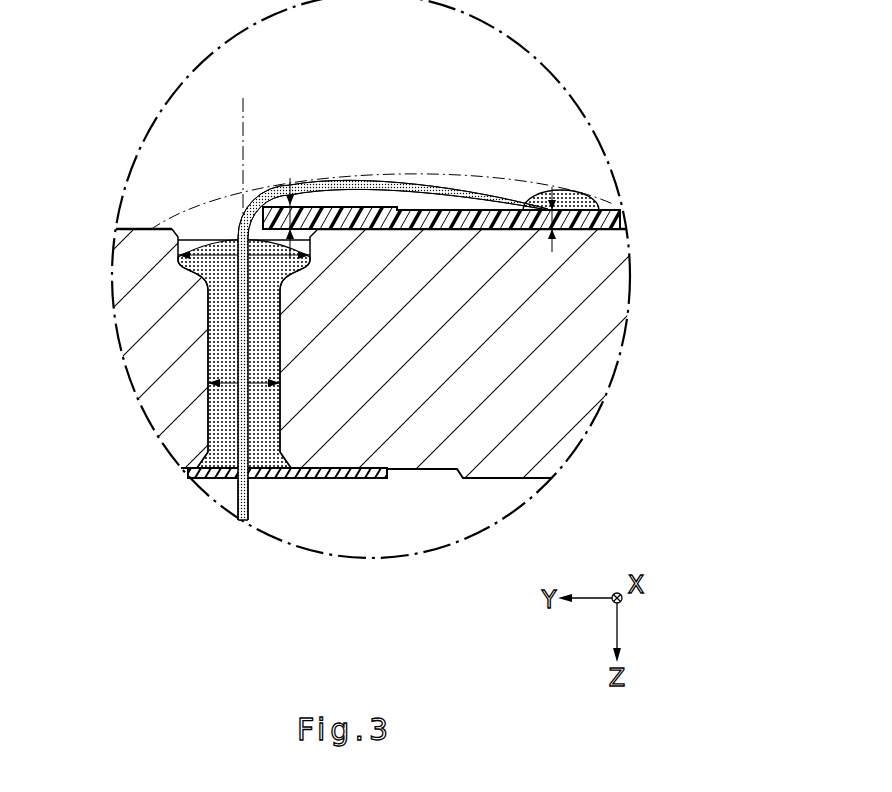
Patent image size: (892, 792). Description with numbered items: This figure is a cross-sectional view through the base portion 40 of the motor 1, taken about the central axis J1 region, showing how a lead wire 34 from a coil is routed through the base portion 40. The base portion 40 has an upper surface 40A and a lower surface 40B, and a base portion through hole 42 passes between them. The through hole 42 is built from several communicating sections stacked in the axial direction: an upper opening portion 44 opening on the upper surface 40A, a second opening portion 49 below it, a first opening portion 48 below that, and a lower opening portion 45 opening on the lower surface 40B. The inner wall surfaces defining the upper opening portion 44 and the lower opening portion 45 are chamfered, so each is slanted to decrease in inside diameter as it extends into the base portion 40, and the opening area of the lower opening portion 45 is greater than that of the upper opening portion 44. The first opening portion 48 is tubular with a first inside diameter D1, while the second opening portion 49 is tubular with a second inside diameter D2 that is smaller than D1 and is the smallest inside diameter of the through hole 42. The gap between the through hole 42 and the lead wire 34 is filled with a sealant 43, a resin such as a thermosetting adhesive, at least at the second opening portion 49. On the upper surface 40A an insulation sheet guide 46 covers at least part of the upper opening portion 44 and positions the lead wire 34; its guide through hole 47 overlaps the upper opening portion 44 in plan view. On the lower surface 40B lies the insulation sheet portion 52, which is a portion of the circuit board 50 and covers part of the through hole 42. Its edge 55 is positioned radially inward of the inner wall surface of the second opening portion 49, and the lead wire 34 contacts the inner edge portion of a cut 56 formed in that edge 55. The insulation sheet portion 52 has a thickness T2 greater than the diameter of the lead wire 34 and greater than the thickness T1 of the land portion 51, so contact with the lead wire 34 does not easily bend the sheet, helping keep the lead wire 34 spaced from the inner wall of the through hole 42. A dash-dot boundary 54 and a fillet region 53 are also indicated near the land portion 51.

The motor 1 is at (165, 145).
The central axis J1 is at (243, 133).
The lead wire 34 is at (403, 180).
The base portion 40 is at (573, 340).
The upper surface 40A is at (417, 470).
The lower surface 40B is at (373, 222).
The base portion through hole 42 is at (267, 349).
The sealant 43 is at (223, 350).
The upper opening portion 44 is at (190, 455).
The lower opening portion 45 is at (166, 240).
The insulation sheet guide 46 is at (328, 480).
The guide through hole 47 is at (248, 480).
The first opening portion 48 is at (324, 248).
The second opening portion 49 is at (295, 386).
The circuit board 50 is at (458, 208).
The land portion 51 is at (570, 198).
The insulation sheet portion 52 is at (327, 194).
The fillet portion 53 is at (580, 187).
The virtual surface 54 is at (468, 170).
The edge 55 is at (252, 213).
The cut 56 is at (250, 217).
The first inside diameter D1 is at (280, 280).
The second inside diameter D2 is at (280, 417).
The thickness of the land portion T1 is at (550, 205).
The thickness of the insulation sheet portion T2 is at (292, 175).